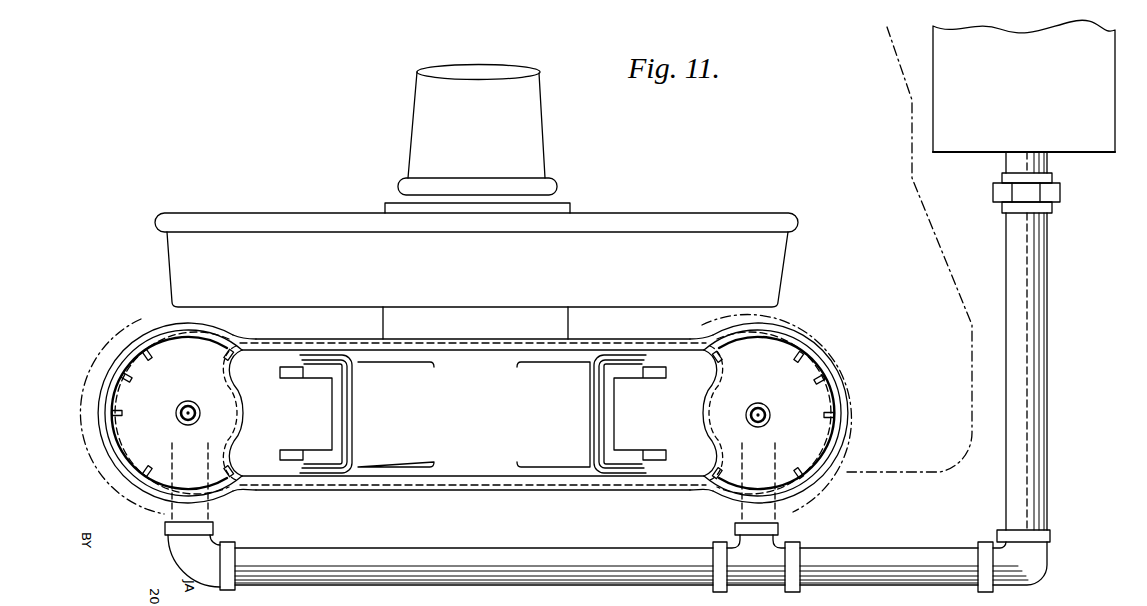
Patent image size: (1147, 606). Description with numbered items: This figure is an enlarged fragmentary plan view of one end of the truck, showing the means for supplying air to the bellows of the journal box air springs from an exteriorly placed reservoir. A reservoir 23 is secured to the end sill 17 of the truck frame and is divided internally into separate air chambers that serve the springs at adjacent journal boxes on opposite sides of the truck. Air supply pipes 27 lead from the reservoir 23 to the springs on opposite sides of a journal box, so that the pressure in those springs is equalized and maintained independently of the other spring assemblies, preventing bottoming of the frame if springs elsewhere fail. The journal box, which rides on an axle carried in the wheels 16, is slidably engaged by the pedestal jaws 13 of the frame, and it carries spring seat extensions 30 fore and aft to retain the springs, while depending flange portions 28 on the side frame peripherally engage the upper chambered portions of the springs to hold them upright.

The pedestal jaws 13 is at (332, 427).
The wheels 16 is at (285, 222).
The end sills 17 is at (927, 221).
The reservoirs 23 is at (985, 140).
The air supply pipes 27 is at (887, 560).
The depending flange portions 28 is at (119, 375).
The spring seat extensions 30 is at (150, 500).